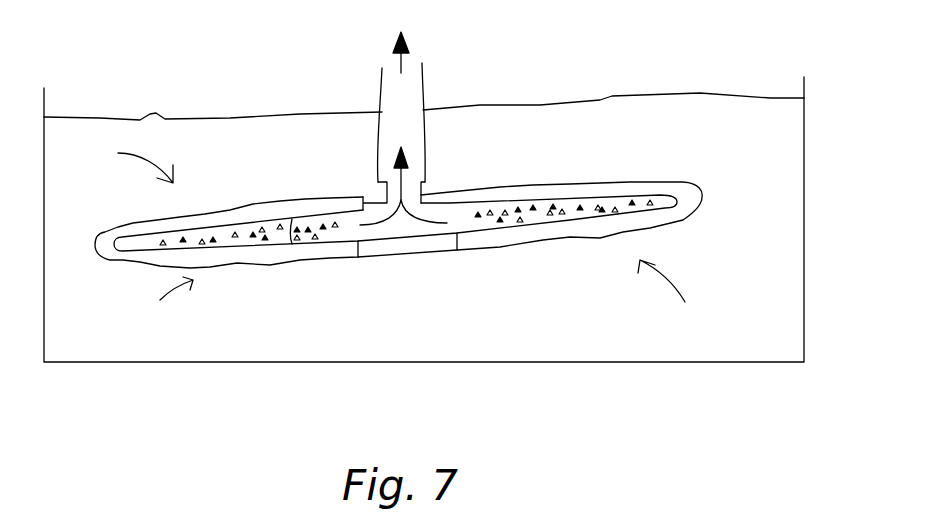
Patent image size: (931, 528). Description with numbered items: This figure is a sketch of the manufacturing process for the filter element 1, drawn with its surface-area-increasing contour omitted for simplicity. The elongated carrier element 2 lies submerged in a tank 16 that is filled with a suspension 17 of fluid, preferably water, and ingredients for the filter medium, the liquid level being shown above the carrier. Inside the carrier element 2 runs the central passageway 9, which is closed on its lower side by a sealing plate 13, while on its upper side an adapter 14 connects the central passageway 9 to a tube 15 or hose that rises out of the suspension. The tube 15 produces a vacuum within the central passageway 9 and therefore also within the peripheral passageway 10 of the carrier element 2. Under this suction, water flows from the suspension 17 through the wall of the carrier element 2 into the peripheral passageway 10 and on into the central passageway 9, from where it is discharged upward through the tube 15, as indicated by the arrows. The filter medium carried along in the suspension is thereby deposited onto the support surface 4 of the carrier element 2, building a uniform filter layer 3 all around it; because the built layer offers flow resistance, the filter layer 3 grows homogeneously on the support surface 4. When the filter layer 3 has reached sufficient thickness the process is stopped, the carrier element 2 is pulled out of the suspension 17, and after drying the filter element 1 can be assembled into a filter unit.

The filter element 1 is at (328, 292).
The carrier element 2 is at (292, 248).
The filter layer 3 is at (253, 212).
The support surface 4 is at (548, 228).
The central passageway 9 is at (395, 228).
The peripheral passageway 10 is at (247, 240).
The sealing plate 13 is at (437, 243).
The adapter 14 is at (425, 187).
The tube 15 is at (423, 82).
The tank 16 is at (804, 330).
The suspension 17 is at (782, 283).